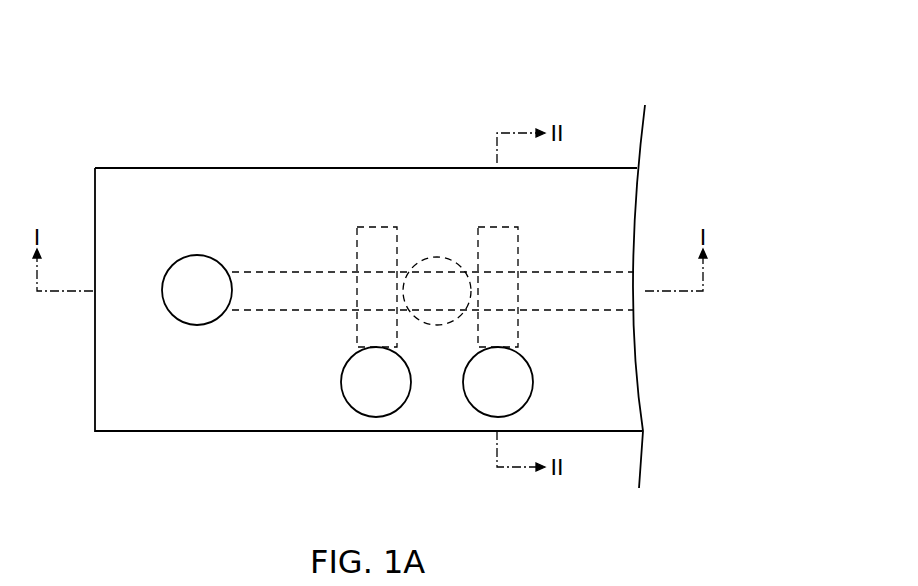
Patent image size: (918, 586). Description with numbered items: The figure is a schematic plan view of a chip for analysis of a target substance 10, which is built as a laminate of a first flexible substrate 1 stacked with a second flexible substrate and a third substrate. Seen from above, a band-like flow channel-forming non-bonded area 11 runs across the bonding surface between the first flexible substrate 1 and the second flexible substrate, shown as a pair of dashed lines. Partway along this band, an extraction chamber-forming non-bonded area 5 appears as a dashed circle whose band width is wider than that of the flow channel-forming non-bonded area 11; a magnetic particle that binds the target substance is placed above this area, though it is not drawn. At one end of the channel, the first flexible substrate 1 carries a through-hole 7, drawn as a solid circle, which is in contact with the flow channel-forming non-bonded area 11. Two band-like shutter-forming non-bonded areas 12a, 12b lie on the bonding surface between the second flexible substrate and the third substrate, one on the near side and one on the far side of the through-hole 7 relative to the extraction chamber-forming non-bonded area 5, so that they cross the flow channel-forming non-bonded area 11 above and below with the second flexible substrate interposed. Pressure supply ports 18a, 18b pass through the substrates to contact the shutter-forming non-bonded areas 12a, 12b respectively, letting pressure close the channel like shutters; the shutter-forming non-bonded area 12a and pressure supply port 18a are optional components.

The first flexible substrate 1 is at (622, 224).
The chip for analysis of a target substance 10 is at (561, 51).
The through-hole 7 is at (196, 285).
The flow channel-forming non-bonded area 11 is at (275, 296).
The extraction chamber-forming non-bonded area 5 is at (437, 318).
The shutter-forming non-bonded area 12a is at (375, 245).
The shutter-forming non-bonded area 12b is at (501, 245).
The pressure supply port 18a is at (375, 397).
The pressure supply port 18b is at (495, 392).